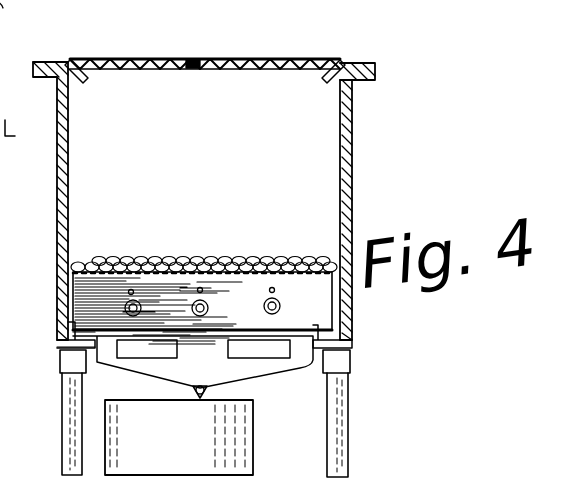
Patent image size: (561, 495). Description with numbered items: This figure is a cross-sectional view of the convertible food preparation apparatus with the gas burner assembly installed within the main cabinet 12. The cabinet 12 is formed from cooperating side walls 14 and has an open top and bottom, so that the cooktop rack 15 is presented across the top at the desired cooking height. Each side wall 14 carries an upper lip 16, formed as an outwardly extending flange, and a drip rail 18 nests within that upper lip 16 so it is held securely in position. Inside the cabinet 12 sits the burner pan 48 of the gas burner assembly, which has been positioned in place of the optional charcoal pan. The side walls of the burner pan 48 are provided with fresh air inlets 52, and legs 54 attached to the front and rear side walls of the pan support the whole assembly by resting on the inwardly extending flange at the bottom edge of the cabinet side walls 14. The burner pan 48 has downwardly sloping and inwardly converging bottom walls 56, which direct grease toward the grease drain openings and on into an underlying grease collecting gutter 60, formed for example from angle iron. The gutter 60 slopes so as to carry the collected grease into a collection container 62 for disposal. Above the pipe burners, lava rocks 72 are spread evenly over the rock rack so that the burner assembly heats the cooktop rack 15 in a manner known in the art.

The main cabinet 12 is at (355, 160).
The side wall 14 is at (196, 157).
The cooktop rack 15 is at (272, 58).
The upper lip 16 is at (365, 83).
The drip rail 18 is at (360, 63).
The burner pan 48 is at (313, 312).
The fresh air inlet 52 is at (278, 352).
The leg 54 is at (343, 343).
The bottom wall 56 is at (137, 370).
The grease collecting gutter 60 is at (208, 391).
The collection container 62 is at (178, 455).
The lava rocks 72 is at (135, 258).